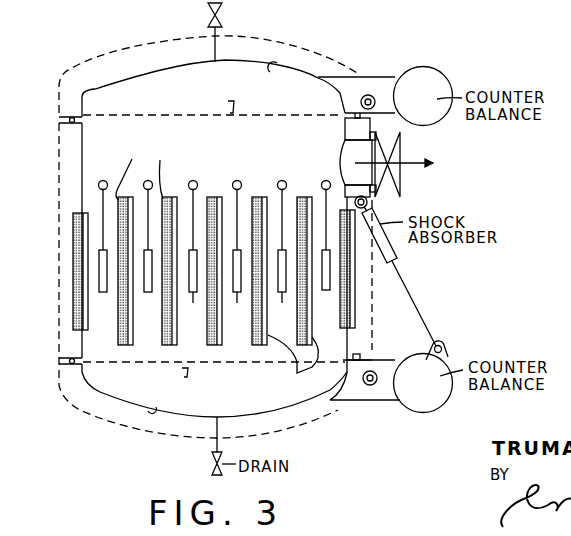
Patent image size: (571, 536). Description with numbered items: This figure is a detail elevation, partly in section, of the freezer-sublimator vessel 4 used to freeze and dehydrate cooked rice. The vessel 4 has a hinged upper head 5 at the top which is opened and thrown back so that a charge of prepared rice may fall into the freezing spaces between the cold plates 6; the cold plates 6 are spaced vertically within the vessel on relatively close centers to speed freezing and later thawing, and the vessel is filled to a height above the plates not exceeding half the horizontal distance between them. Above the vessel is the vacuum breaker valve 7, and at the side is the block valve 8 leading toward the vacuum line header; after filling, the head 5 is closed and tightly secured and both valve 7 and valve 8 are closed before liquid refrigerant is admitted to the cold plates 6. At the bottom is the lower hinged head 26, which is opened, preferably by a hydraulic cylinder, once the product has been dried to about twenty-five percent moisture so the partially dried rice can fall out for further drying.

The freezer-sublimator vessel 4 is at (82, 175).
The hinged upper head 5 is at (270, 72).
The cold plates 6 is at (257, 193).
The vacuum breaker valve 7 is at (222, 10).
The block valve 8 is at (403, 147).
The lower hinged head 26 is at (156, 407).